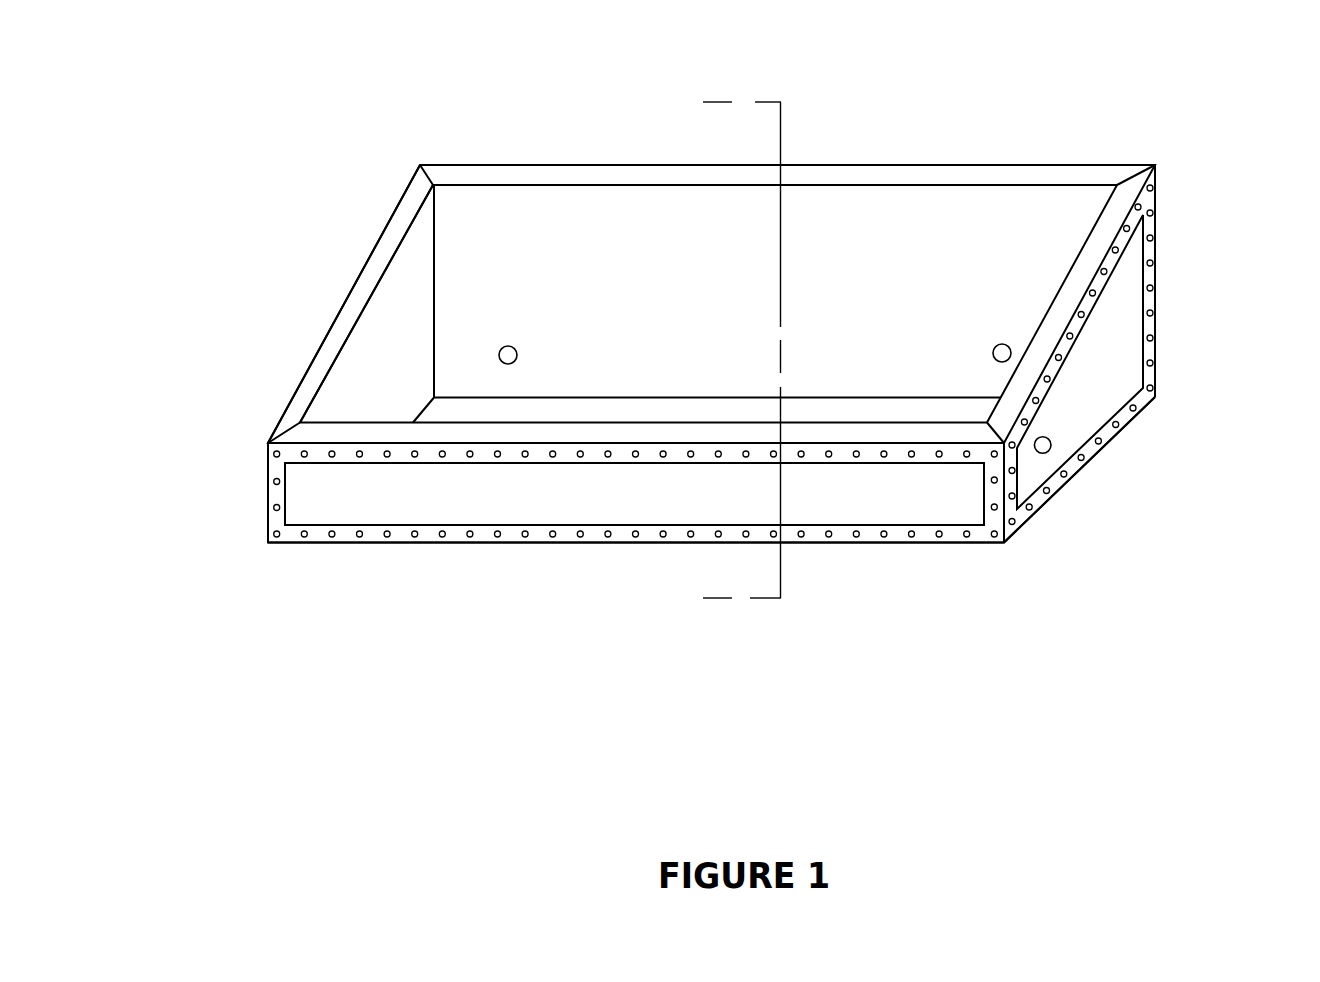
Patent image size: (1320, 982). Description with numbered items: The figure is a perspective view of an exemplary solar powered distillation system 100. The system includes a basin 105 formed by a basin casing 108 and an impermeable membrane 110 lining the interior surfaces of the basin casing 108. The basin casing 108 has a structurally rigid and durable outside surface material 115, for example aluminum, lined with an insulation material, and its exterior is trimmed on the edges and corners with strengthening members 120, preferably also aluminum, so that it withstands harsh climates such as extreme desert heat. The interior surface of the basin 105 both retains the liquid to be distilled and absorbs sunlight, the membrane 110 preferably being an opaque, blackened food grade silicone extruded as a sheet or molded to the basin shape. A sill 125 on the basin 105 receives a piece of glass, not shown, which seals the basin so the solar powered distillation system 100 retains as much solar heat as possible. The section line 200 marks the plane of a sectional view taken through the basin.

The solar powered distillation system 100 is at (266, 251).
The basin 105 is at (828, 407).
The basin casing 108 is at (1133, 273).
The impermeable membrane 110 is at (363, 370).
The outside surface material 115 is at (307, 503).
The strengthening members 120 is at (923, 535).
The sill 125 is at (420, 190).
The section line 200 is at (687, 102).